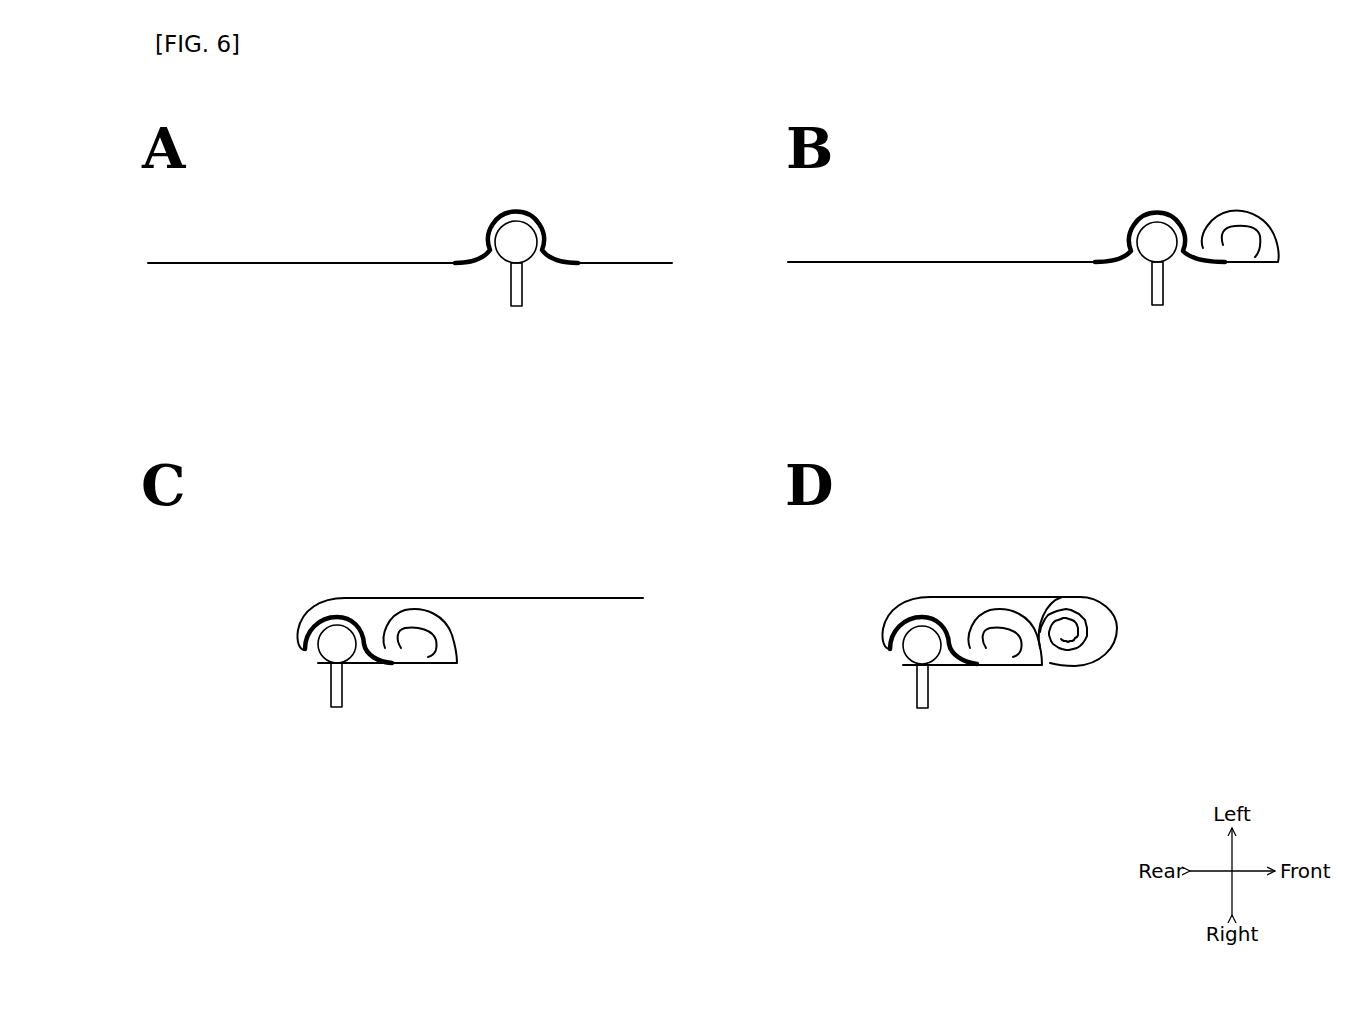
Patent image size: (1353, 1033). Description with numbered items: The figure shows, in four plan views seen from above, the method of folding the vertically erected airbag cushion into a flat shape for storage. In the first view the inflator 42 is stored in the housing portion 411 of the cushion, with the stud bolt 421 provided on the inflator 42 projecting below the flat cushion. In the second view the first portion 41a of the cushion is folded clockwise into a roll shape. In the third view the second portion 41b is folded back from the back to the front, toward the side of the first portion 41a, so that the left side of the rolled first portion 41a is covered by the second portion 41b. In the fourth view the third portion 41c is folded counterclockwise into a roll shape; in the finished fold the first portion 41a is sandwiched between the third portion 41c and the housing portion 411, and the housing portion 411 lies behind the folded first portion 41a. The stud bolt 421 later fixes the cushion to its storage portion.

The first portion 41a is at (644, 270).
The second portion 41b is at (362, 270).
The third portion 41c is at (165, 270).
The housing portion 411 is at (503, 212).
The inflator 42 is at (540, 226).
The stud bolt 421 is at (525, 292).